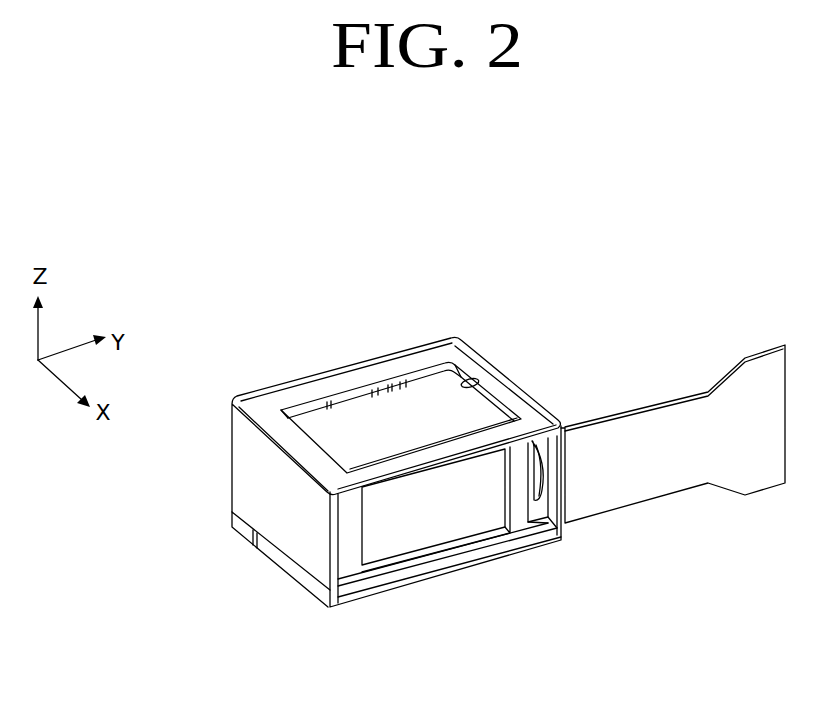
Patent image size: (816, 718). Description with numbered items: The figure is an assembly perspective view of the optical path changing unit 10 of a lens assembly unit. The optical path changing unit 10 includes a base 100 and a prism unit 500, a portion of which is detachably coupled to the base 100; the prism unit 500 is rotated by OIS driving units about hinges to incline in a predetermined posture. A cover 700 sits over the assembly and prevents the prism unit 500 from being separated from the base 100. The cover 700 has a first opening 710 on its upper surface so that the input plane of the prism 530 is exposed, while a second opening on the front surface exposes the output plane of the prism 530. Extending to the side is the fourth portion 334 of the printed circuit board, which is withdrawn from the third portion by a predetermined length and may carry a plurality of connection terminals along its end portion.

The optical path changing unit 10 is at (446, 181).
The base 100 is at (388, 597).
The fourth portion 334 is at (658, 425).
The prism unit 500 is at (338, 568).
The prism 530 is at (410, 384).
The cover 700 is at (293, 383).
The first opening 710 is at (478, 382).